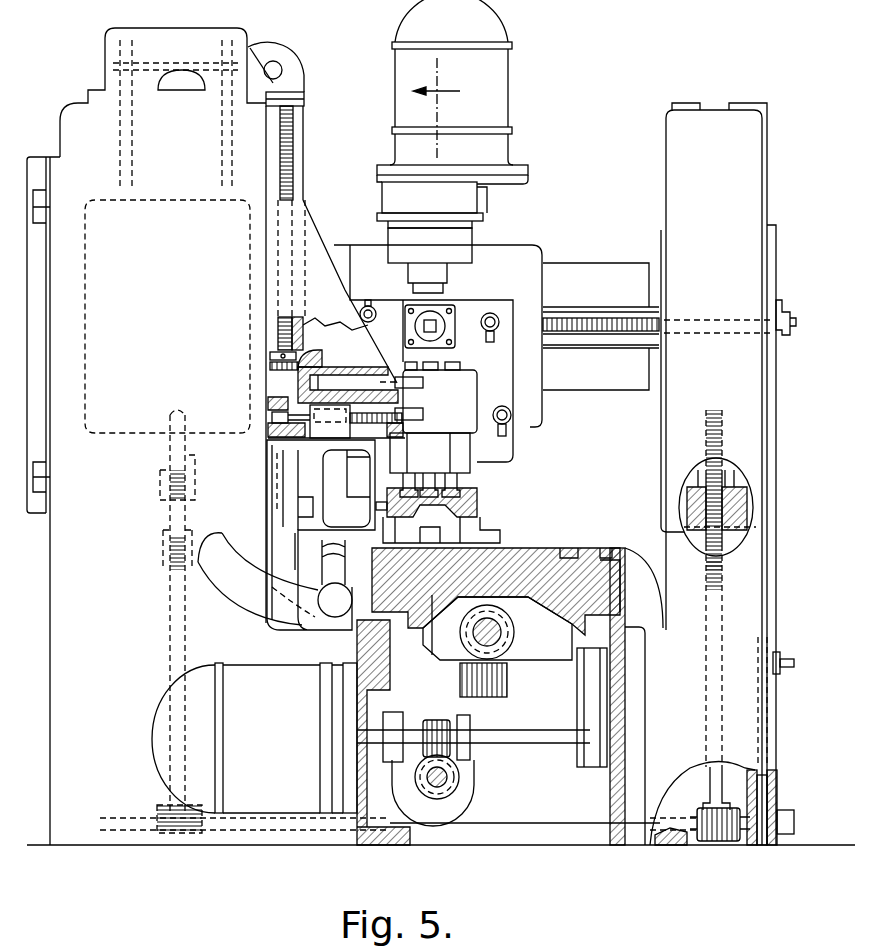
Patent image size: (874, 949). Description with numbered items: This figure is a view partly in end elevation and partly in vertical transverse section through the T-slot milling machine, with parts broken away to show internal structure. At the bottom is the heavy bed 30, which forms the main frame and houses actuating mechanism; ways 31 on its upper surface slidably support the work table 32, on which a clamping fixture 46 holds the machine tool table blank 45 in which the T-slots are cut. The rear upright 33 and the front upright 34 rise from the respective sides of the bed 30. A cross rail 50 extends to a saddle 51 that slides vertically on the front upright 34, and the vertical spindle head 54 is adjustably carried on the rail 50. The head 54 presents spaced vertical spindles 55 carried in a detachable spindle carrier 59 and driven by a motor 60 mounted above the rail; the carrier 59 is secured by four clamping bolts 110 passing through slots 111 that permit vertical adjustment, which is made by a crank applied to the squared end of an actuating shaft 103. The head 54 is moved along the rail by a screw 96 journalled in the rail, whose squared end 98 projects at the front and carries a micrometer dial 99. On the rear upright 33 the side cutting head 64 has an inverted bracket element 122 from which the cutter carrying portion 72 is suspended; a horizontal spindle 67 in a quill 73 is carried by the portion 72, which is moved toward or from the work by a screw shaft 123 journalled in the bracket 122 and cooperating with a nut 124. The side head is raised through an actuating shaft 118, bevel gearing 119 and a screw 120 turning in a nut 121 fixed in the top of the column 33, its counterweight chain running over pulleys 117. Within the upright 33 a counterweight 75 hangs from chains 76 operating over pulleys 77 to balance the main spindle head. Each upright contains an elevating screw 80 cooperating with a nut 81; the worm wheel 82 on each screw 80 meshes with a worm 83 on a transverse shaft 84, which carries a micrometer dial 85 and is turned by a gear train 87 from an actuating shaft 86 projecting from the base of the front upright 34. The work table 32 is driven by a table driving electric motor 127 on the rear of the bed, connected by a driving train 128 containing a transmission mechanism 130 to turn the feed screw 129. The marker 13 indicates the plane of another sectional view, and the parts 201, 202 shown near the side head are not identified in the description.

The base / spindle axis 13 is at (496, 358).
The bed 30 is at (625, 690).
The ways 31 is at (610, 600).
The work table 32 is at (574, 548).
The rear upright 33 is at (80, 122).
The front upright 34 is at (707, 115).
The machine tool table blank 45 is at (477, 502).
The clamping fixture 46 is at (500, 535).
The cross rail 50 is at (597, 263).
The saddle 51 is at (661, 420).
The vertical spindle head 54 is at (470, 200).
The secondary spindles 55 is at (455, 478).
The spindle carrying portion 59 is at (507, 368).
The motor 60 is at (503, 80).
The side cutting head 64 is at (293, 299).
The horizontal spindle 67 is at (378, 502).
The cutter carrying portion 72 is at (288, 470).
The quill 73 is at (378, 505).
The counterweight 75 is at (97, 200).
The chains 76 is at (222, 143).
The pulleys 77 is at (216, 50).
The elevating screw 80 is at (170, 600).
The nut 81 is at (165, 515).
The worm wheel 82 is at (158, 808).
The worm 83 is at (178, 838).
The transverse shaft 84 is at (505, 823).
The micrometer dial 85 is at (780, 840).
The actuating shaft 86 is at (790, 655).
The gear train 87 is at (762, 718).
The screw 96 is at (608, 335).
The squared end 98 is at (783, 535).
The micrometer dial 99 is at (783, 340).
The actuating shaft 103 is at (410, 305).
The clamping bolts 110 is at (493, 308).
The slots 111 is at (494, 332).
The pulleys 117 is at (276, 70).
The actuating shaft 118 is at (424, 383).
The bevel gearing 119 is at (283, 370).
The screw 120 is at (295, 150).
The nut 121 is at (302, 96).
The inverted bracket element 122 is at (300, 270).
The screw shaft 123 is at (424, 414).
The nut 124 is at (270, 405).
The table driving electric motor 127 is at (280, 675).
The driving train 128 is at (510, 740).
The feed screw 129 is at (500, 633).
The transmission mechanism 130 is at (577, 710).
The hose 201 is at (238, 585).
The hose fitting 202 is at (325, 578).